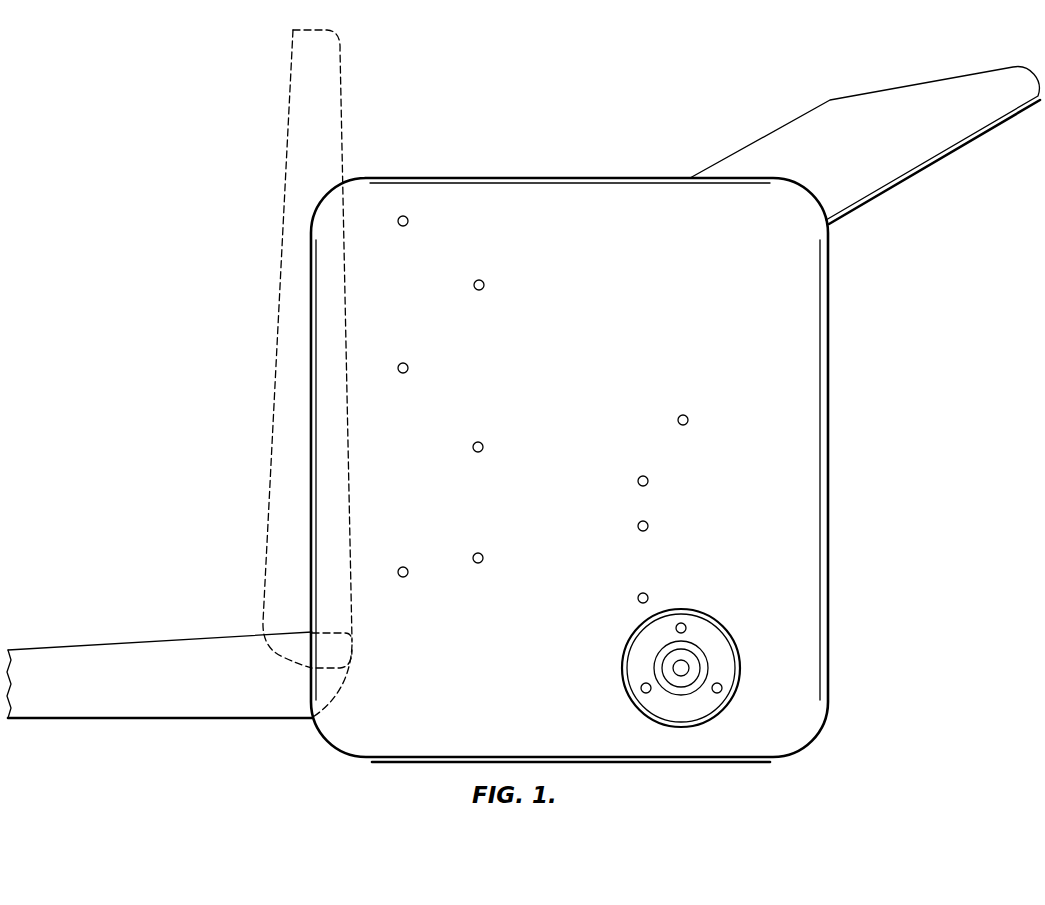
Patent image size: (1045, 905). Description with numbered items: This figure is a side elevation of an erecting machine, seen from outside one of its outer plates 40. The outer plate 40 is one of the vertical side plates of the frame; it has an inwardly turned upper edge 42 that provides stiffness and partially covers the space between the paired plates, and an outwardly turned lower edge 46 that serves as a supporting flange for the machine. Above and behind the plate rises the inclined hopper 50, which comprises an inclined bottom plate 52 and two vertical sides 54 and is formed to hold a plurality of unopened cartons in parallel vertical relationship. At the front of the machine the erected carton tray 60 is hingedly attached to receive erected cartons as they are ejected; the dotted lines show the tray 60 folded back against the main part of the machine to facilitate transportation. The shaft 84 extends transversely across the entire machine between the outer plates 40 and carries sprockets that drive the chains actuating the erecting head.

The outer plate 40 is at (797, 343).
The inwardly turned upper edge 42 is at (581, 168).
The outwardly turned lower edge 46 is at (438, 757).
The inclined hopper 50 is at (820, 122).
The inclined bottom plate 52 is at (926, 167).
The vertical side 54 is at (879, 159).
The erected carton tray 60 is at (284, 300).
The shaft 84 is at (681, 672).